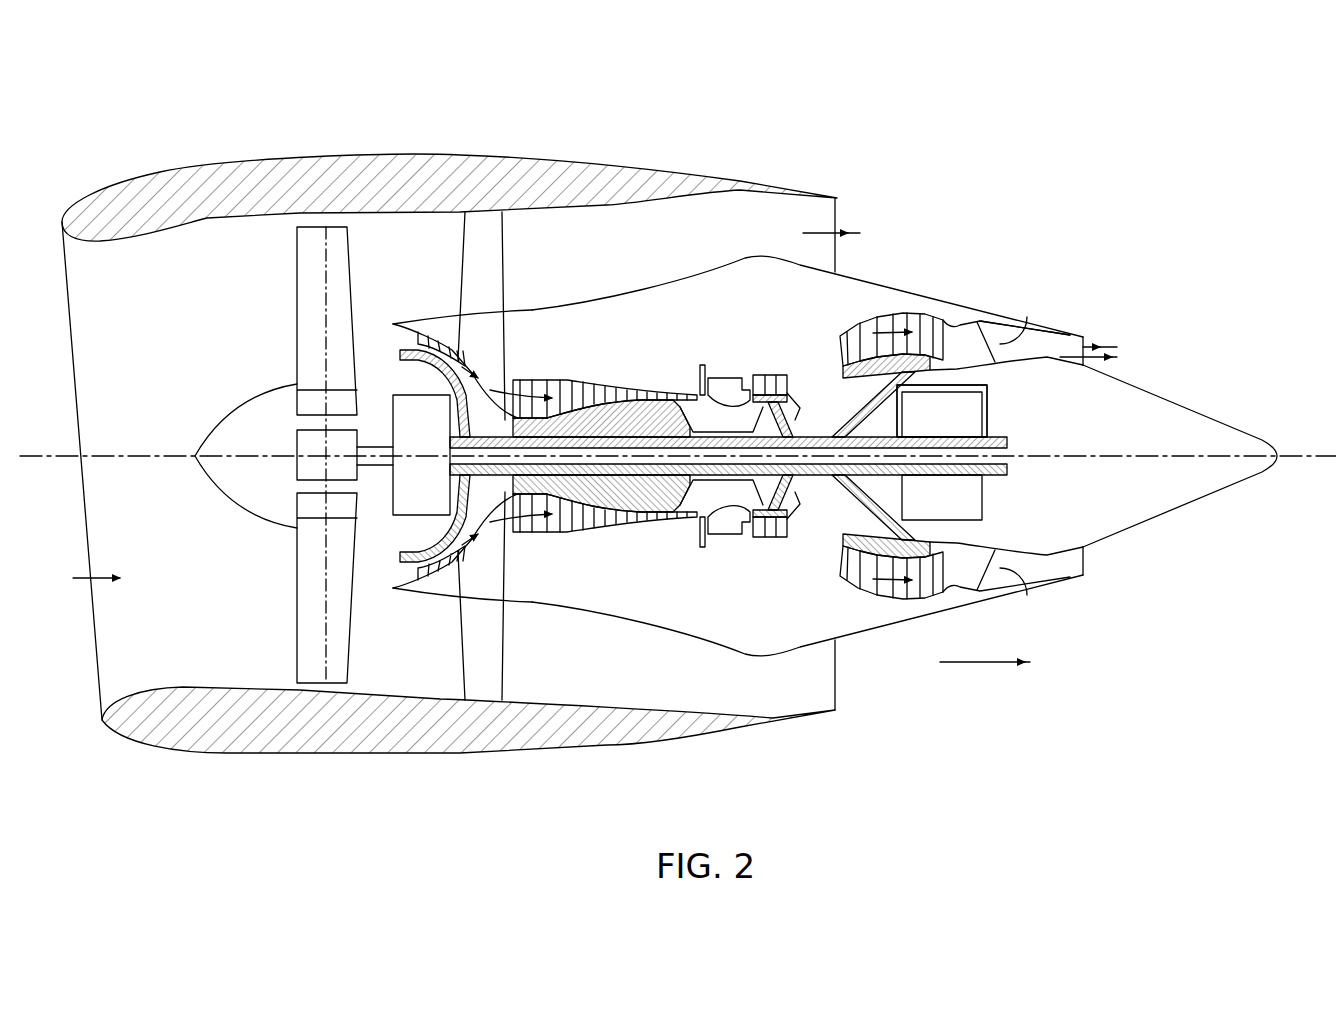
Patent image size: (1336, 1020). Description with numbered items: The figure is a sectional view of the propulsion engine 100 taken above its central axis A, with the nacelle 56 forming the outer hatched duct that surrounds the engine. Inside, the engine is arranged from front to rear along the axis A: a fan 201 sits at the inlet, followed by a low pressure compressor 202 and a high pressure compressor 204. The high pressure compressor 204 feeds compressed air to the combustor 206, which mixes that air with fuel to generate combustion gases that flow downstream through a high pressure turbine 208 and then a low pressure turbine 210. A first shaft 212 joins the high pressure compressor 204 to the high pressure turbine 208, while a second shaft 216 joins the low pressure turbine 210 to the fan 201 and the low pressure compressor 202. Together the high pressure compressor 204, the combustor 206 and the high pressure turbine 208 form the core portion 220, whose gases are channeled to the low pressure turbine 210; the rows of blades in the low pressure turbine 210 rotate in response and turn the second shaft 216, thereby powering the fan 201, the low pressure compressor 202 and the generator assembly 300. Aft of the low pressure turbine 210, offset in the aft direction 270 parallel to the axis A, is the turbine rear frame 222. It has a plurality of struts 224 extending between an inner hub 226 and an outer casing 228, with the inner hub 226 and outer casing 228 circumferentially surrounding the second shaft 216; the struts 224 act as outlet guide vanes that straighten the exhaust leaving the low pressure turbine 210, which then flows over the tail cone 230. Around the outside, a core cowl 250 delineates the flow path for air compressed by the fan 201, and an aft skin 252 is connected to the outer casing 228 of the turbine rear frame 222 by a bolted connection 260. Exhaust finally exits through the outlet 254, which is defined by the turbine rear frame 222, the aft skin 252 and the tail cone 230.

The propulsion engine 100 is at (87, 143).
The nacelle 56 is at (690, 171).
The fan 201 is at (306, 303).
The low pressure compressor 202 is at (389, 325).
The high pressure compressor 204 is at (585, 383).
The combustor 206 is at (698, 380).
The high pressure turbine 208 is at (758, 372).
The low pressure turbine 210 is at (843, 336).
The first shaft 212 is at (772, 418).
The second shaft 216 is at (1010, 440).
The core portion 220 is at (692, 538).
The turbine rear frame 222 is at (960, 320).
The struts 224 is at (1023, 320).
The inner hub 226 is at (976, 540).
The outer casing 228 is at (960, 585).
The tail cone 230 is at (1218, 416).
The core cowl 250 is at (887, 272).
The aft skin 252 is at (1083, 336).
The outlet 254 is at (1092, 347).
The bolted connection 260 is at (984, 320).
The aft direction 270 is at (986, 666).
The generator assembly 300 is at (1000, 420).
The central axis A is at (1297, 455).